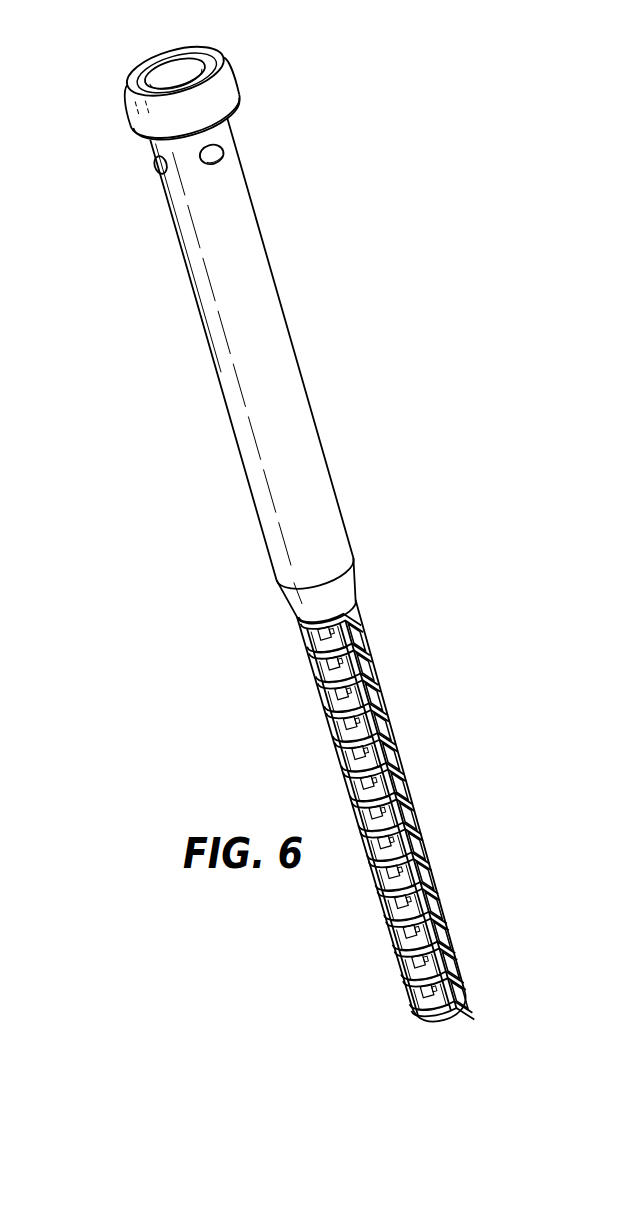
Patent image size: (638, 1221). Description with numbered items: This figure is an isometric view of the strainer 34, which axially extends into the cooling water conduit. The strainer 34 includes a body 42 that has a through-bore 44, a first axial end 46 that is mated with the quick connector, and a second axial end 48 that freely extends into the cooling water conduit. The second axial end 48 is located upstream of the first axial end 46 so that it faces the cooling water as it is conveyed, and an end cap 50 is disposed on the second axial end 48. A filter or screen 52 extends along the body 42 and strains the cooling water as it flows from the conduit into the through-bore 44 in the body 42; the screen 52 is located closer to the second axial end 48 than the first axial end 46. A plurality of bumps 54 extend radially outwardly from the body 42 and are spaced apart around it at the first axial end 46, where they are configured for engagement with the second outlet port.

The strainer 34 is at (410, 270).
The body 42 is at (297, 383).
The through-bore 44 is at (162, 76).
The first axial end 46 is at (244, 76).
The second axial end 48 is at (492, 983).
The end cap 50 is at (443, 1016).
The screen 52 is at (392, 765).
The bumps 54 is at (157, 168).